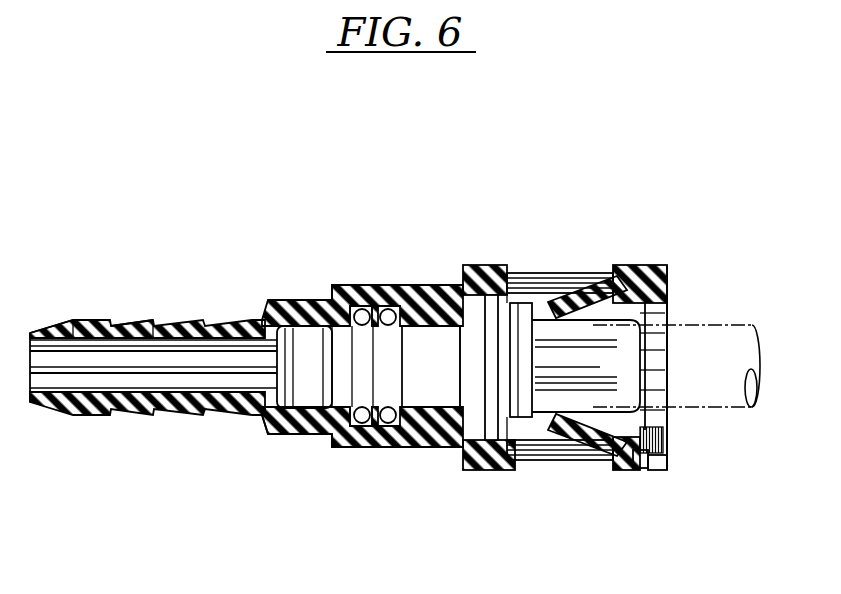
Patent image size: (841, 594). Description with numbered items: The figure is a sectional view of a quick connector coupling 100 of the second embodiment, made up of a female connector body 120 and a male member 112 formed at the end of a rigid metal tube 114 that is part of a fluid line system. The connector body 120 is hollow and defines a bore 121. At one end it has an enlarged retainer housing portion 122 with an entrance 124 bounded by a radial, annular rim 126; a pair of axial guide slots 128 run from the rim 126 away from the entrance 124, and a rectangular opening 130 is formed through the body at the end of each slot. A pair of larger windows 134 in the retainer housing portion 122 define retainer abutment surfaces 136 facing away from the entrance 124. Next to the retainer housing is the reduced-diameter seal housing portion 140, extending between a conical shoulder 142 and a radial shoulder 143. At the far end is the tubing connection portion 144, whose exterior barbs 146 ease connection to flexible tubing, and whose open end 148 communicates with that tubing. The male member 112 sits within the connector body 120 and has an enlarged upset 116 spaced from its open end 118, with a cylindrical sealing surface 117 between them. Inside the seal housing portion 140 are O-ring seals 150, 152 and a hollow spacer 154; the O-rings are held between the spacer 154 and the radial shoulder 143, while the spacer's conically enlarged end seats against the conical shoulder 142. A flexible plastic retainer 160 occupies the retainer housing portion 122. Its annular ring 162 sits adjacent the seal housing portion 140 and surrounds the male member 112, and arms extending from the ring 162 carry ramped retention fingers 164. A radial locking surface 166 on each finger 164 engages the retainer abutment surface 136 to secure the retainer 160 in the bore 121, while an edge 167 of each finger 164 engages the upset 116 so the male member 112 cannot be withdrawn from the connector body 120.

The quick connector coupling 100 is at (593, 342).
The male member 112 is at (318, 433).
The tube 114 is at (753, 387).
The upset 116 is at (533, 306).
The cylindrical sealing surface 117 is at (456, 434).
The open end 118 is at (277, 372).
The connector body 120 is at (354, 351).
The bore 121 is at (314, 283).
The retainer housing portion 122 is at (490, 470).
The entrance 124 is at (652, 468).
The rim 126 is at (636, 468).
The axial guide slots 128 is at (571, 366).
The rectangular opening 130 is at (523, 273).
The windows 134 is at (603, 464).
The retainer abutment surface 136 is at (614, 263).
The seal housing portion 140 is at (383, 448).
The conical shoulder 142 is at (451, 284).
The radial shoulder 143 is at (363, 284).
The tubing connection portion 144 is at (78, 331).
The barbs 146 is at (158, 324).
The open end 148 is at (29, 402).
The O-ring seal 150 is at (323, 446).
The O-ring seal 152 is at (412, 288).
The spacer 154 is at (421, 289).
The retainer 160 is at (698, 326).
The annular ring 162 is at (492, 266).
The ramped retention fingers 164 is at (592, 290).
The radial locking surface 166 is at (632, 462).
The edge 167 is at (562, 414).